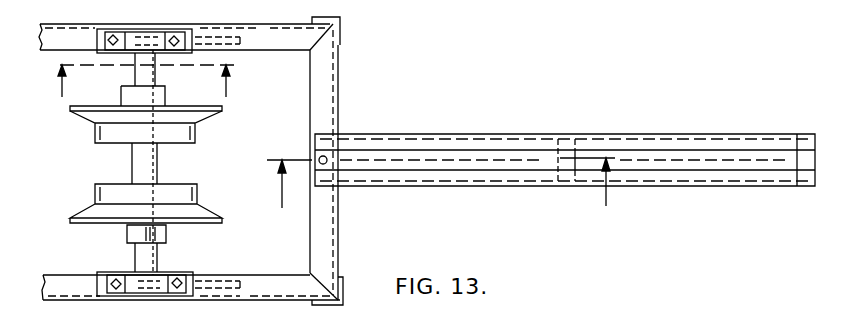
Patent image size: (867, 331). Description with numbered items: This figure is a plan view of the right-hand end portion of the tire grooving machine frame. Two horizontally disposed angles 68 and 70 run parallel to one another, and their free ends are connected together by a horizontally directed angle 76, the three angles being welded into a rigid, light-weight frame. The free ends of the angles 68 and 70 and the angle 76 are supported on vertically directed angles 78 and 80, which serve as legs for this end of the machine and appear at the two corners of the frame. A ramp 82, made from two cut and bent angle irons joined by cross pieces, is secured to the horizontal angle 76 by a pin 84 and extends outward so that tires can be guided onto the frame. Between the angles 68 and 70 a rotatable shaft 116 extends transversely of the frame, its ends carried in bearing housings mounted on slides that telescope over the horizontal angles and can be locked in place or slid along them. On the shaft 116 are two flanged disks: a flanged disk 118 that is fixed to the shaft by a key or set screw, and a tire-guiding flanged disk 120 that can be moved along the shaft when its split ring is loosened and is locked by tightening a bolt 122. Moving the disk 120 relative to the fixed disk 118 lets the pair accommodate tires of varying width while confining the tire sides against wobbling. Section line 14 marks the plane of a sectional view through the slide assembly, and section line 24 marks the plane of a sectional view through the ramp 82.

The section line 14- 14 is at (145, 87).
The section line 24- 24 is at (440, 195).
The horizontal angle 68 is at (275, 293).
The horizontal angle 70 is at (280, 45).
The horizontal angle 76 is at (330, 97).
The vertical angle 78 is at (343, 290).
The vertical angle 80 is at (341, 22).
The ramp 82 is at (492, 133).
The pin 84 is at (319, 158).
The shaft 116 is at (155, 162).
The flanged disk 118 is at (95, 135).
The flanged disk 120 is at (95, 195).
The bolt 122 is at (166, 237).